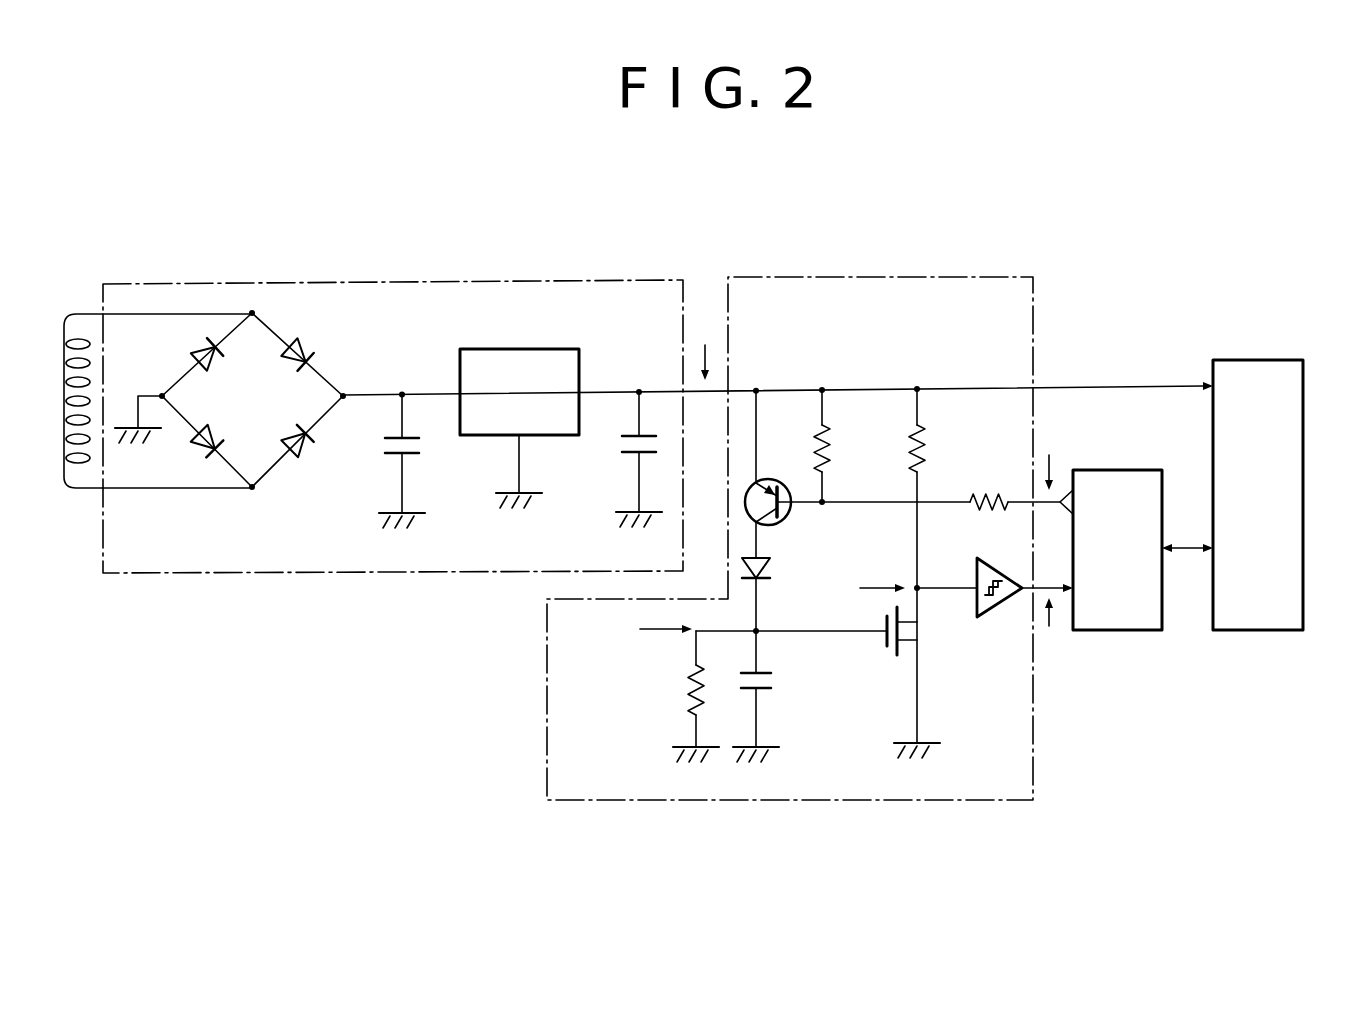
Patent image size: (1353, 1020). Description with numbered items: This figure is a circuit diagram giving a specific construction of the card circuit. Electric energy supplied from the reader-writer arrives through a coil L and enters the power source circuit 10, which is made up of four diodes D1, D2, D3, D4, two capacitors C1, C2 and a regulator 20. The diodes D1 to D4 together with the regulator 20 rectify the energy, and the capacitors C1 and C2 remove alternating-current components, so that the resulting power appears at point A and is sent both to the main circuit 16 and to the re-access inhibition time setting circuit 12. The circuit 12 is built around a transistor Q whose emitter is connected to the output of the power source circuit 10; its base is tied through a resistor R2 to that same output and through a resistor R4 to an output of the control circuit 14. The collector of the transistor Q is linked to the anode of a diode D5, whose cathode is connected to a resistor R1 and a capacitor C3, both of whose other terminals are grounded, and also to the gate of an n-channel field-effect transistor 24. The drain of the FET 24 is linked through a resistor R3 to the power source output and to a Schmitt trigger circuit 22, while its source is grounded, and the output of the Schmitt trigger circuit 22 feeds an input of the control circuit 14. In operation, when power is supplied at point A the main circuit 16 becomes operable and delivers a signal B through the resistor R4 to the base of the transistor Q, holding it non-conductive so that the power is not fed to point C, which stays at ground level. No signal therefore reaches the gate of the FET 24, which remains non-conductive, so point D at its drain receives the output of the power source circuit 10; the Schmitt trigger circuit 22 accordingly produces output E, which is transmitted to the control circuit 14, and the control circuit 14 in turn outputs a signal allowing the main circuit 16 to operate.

The power source circuit 10 is at (299, 280).
The re-access inhibition time setting circuit 12 is at (775, 276).
The control circuit 14 is at (1113, 470).
The main circuit 16 is at (1253, 360).
The regulator 20 is at (505, 349).
The Schmitt trigger circuit 22 is at (1000, 607).
The field-effect transistor 24 is at (894, 655).
The coil L is at (74, 411).
The diode D1 is at (195, 345).
The diode D2 is at (316, 345).
The diode D3 is at (193, 454).
The diode D4 is at (314, 454).
The diode D5 is at (778, 590).
The capacitor C1 is at (419, 461).
The capacitor C2 is at (623, 459).
The capacitor C3 is at (774, 696).
The resistor R1 is at (688, 696).
The resistor R2 is at (842, 447).
The resistor R3 is at (938, 488).
The resistor R4 is at (941, 488).
The transistor Q is at (783, 474).
The point A is at (706, 346).
The signal B is at (1050, 458).
The point C is at (654, 630).
The point D is at (873, 592).
The output E is at (1050, 634).